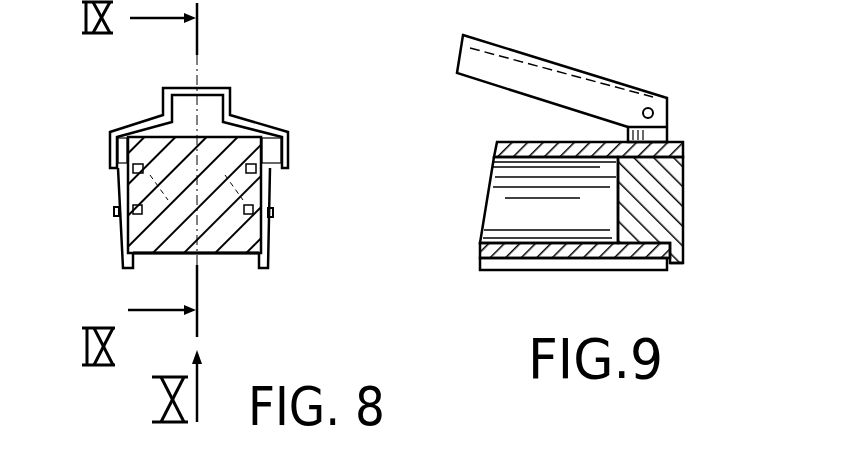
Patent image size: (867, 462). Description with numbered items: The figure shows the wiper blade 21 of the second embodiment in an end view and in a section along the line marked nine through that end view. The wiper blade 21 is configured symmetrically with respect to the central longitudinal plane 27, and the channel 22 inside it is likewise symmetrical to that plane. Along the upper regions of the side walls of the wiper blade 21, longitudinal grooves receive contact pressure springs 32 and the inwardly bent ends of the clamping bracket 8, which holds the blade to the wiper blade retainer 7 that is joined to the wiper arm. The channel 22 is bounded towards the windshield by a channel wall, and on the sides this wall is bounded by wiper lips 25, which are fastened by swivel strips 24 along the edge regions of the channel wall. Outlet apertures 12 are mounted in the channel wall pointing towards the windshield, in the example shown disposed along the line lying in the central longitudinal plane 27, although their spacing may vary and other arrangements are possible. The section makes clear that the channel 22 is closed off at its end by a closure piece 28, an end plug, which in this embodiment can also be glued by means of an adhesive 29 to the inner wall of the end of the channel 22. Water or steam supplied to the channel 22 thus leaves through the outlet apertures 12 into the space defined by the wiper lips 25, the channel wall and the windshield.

In FIG. 9, the wiper blade retainer 7 is at (587, 92).
In FIG. 8, the clamping bracket 8 is at (250, 123).
In FIG. 9, the outlet apertures 12 is at (518, 256).
In FIG. 9, the wiper blade 21 is at (463, 448).
In FIG. 8, the channel 22 is at (255, 187).
In FIG. 9, the channel 22 is at (568, 218).
In FIG. 8, the swivel strips 24 is at (274, 215).
In FIG. 8, the wiper lips 25 is at (270, 245).
In FIG. 8, the central longitudinal plane 27 is at (199, 266).
In FIG. 9, the closure piece 28 is at (678, 258).
In FIG. 9, the adhesive 29 is at (650, 232).
In FIG. 8, the contact pressure springs 32 is at (273, 157).